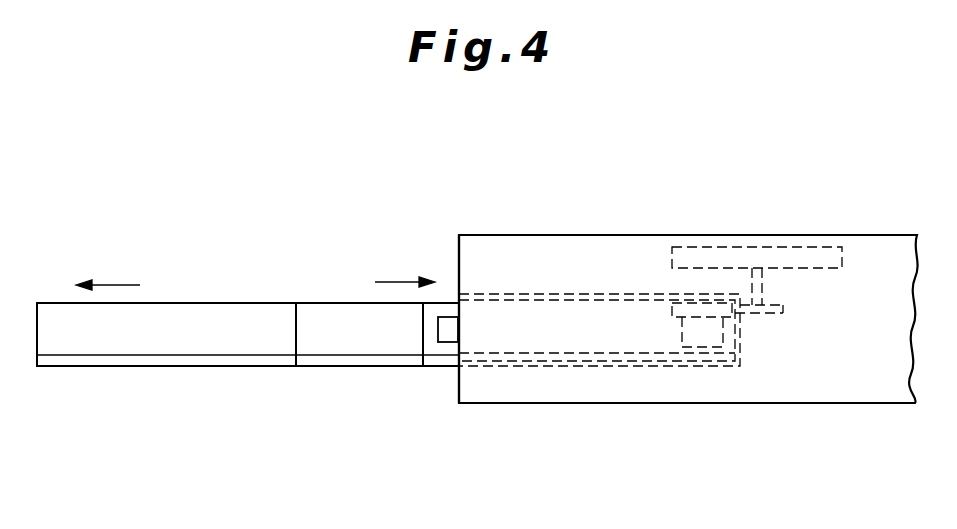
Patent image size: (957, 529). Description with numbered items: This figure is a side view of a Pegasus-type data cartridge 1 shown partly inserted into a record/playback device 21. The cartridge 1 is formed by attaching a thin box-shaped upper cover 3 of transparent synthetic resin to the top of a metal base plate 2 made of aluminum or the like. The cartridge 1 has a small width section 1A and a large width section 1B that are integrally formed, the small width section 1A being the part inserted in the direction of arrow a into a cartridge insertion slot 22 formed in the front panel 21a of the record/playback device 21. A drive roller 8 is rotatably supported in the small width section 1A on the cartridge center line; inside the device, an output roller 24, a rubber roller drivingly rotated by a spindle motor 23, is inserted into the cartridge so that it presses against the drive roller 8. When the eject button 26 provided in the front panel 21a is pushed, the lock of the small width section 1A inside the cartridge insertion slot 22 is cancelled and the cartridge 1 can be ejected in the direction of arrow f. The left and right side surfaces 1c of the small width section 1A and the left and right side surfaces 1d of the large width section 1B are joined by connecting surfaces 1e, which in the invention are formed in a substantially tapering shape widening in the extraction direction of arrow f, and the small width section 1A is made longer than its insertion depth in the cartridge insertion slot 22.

The cartridge 1 is at (271, 294).
The small width section 1A is at (591, 345).
The large width section 1B is at (98, 345).
The side surfaces of the small width section 1c is at (445, 301).
The side surfaces of the large width section 1d is at (253, 340).
The connecting surfaces 1e is at (325, 340).
The base plate 2 is at (175, 368).
The upper cover 3 is at (211, 302).
The drive roller 8 is at (704, 310).
The record/playback device 21 is at (882, 221).
The front panel 21a is at (456, 392).
The cartridge insertion slot 22 is at (580, 312).
The spindle motor 23 is at (807, 247).
The output roller 24 is at (778, 309).
The eject button 26 is at (437, 341).
The arrow f is at (120, 284).
The arrow a is at (394, 281).